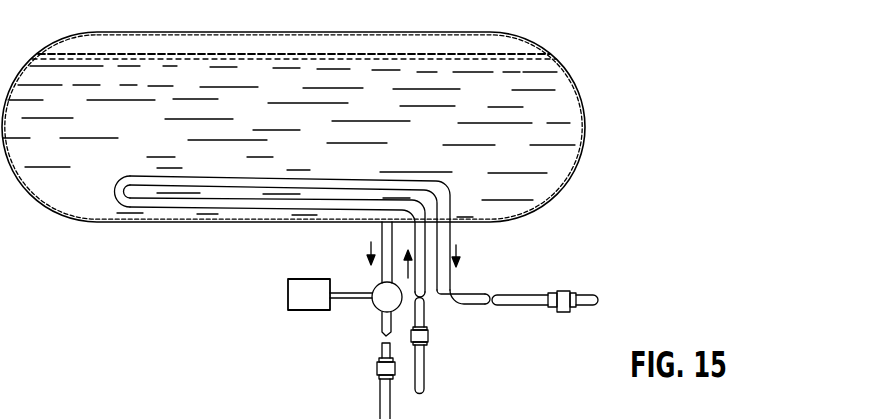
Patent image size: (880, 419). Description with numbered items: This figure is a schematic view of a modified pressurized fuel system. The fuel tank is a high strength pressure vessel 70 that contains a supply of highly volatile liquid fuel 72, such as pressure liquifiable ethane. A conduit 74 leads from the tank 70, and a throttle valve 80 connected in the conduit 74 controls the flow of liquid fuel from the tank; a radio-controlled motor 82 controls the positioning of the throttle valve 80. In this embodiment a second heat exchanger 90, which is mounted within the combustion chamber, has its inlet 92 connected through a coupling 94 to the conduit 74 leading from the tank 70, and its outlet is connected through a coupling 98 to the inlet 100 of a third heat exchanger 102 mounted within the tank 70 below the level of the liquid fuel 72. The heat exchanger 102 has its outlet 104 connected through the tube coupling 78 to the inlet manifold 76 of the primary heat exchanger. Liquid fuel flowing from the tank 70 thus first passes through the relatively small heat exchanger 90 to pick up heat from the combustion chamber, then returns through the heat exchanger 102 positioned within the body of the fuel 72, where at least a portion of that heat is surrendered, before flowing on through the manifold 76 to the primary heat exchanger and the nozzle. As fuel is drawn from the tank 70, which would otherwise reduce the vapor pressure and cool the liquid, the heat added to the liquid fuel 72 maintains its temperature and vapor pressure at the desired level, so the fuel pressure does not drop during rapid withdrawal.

The pressure vessel 70 is at (550, 62).
The liquid fuel 72 is at (533, 105).
The third heat exchanger 102 is at (353, 182).
The inlet 100 is at (423, 237).
The outlet 104 is at (447, 275).
The conduit 74 is at (380, 272).
The throttle valve 80 is at (377, 310).
The radio-controlled motor 82 is at (288, 307).
The inlet 92 is at (380, 400).
The coupling 94 is at (377, 364).
The second heat exchanger 90 is at (425, 380).
The coupling 98 is at (430, 336).
The manifold 76 is at (585, 307).
The tube coupling 78 is at (561, 291).